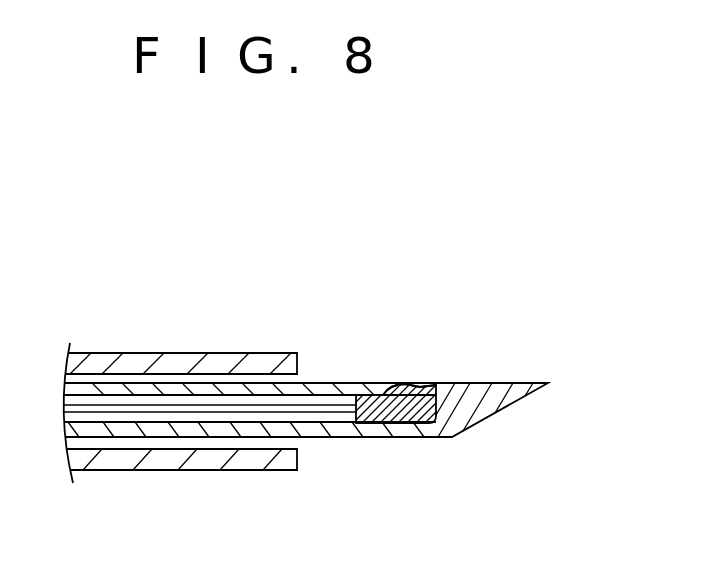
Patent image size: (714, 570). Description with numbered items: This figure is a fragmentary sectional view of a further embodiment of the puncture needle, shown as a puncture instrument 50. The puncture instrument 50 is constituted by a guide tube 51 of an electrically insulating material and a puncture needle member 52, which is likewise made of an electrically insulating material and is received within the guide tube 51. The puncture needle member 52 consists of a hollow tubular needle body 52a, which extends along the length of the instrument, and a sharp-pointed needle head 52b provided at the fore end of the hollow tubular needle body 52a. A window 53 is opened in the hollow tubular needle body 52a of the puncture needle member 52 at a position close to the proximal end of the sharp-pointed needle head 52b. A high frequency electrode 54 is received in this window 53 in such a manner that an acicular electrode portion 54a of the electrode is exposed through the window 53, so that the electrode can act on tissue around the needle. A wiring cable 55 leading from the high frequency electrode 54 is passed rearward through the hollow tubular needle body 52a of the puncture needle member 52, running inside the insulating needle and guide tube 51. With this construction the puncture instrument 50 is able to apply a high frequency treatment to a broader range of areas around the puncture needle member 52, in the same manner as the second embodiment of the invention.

The puncture instrument 50 is at (329, 392).
The guide tube 51 is at (202, 463).
The puncture needle member 52 is at (330, 387).
The hollow tubular needle body 52a is at (140, 388).
The sharp-pointed needle head 52b is at (520, 390).
The window 53 is at (425, 383).
The high frequency electrode 54 is at (398, 412).
The acicular electrode portion 54a is at (403, 383).
The wiring cable 55 is at (105, 410).